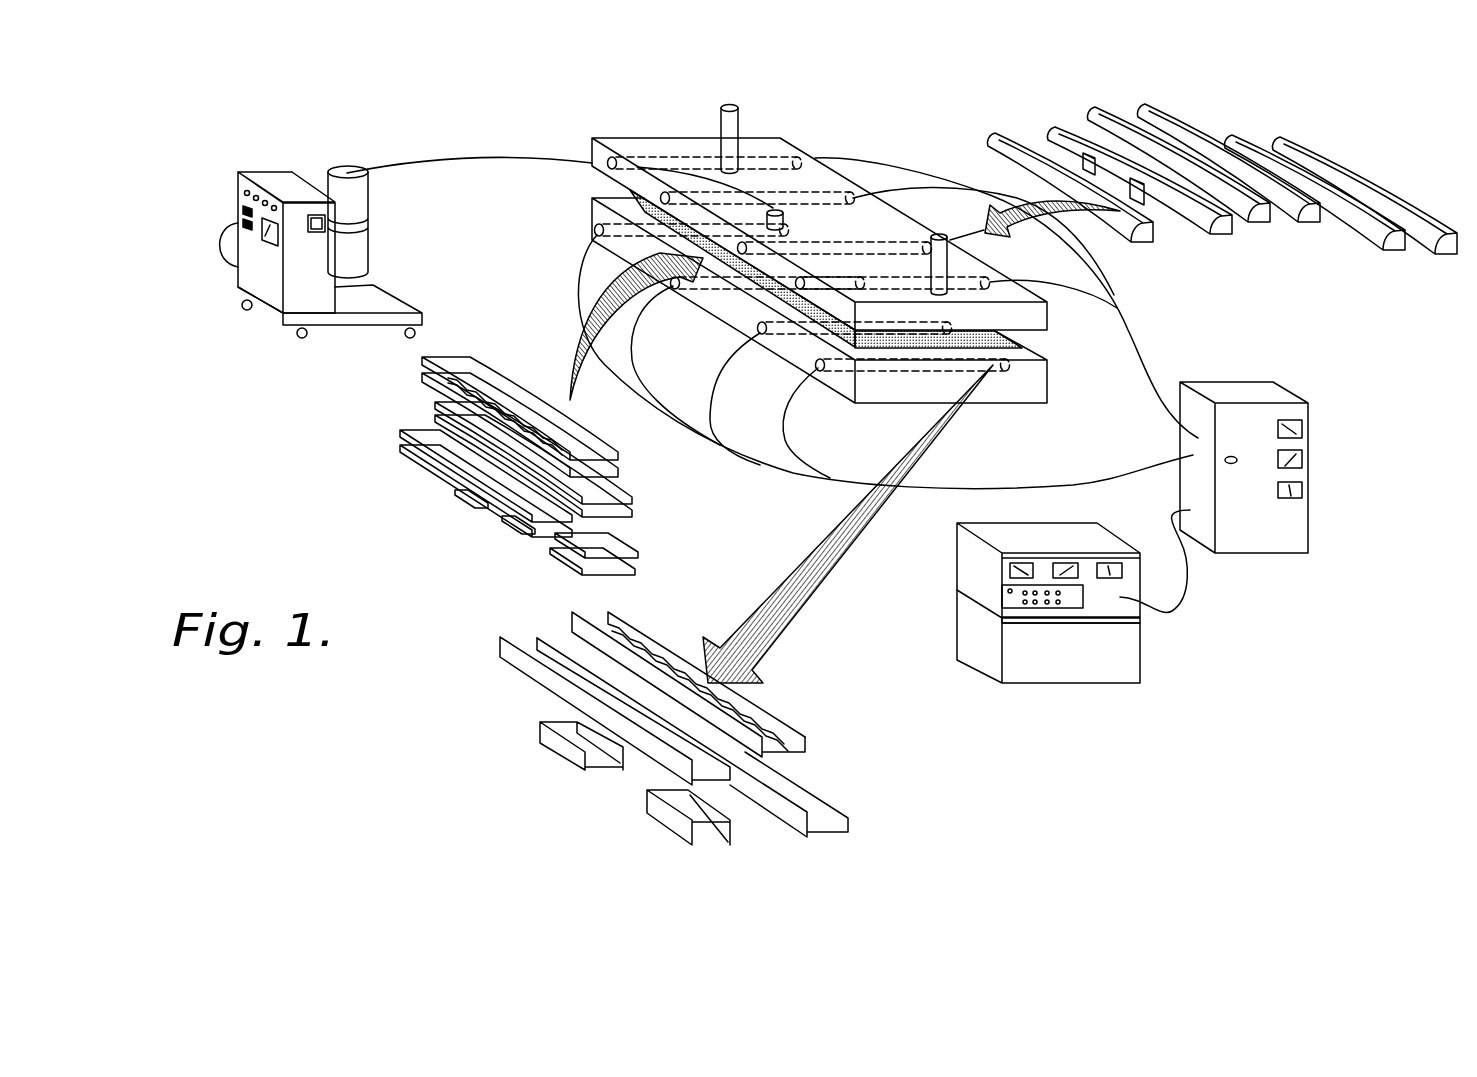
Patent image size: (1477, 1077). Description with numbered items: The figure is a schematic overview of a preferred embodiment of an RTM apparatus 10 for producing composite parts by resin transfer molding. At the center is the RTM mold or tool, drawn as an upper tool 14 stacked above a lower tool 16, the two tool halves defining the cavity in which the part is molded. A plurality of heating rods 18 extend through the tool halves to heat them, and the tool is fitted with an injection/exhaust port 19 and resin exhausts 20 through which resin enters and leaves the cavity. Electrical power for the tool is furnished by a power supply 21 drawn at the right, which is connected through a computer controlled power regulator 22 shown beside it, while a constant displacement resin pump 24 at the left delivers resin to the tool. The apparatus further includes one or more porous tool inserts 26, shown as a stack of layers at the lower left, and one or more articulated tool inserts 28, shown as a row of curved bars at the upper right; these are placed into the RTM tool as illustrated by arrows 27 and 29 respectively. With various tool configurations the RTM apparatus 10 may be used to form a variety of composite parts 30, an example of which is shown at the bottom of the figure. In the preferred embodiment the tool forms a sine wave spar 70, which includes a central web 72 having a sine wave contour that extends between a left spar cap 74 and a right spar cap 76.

The RTM apparatus 10 is at (866, 110).
The upper tool 14 is at (590, 138).
The lower tool 16 is at (590, 210).
The heating rods 18 is at (594, 233).
The injection/exhaust port 19 is at (783, 221).
The resin exhausts 20 is at (731, 106).
The power supply 21 is at (1307, 415).
The computer controlled power regulator 22 is at (1117, 663).
The constant displacement resin pump 24 is at (247, 277).
The porous tool inserts 26 is at (418, 408).
The arrow 27 is at (580, 370).
The articulated tool inserts 28 is at (1303, 106).
The arrow 29 is at (1005, 232).
The composite parts 30 is at (518, 723).
The sine wave spar 70 is at (816, 737).
The central web 72 is at (745, 715).
The left spar cap 74 is at (572, 622).
The right spar cap 76 is at (609, 612).